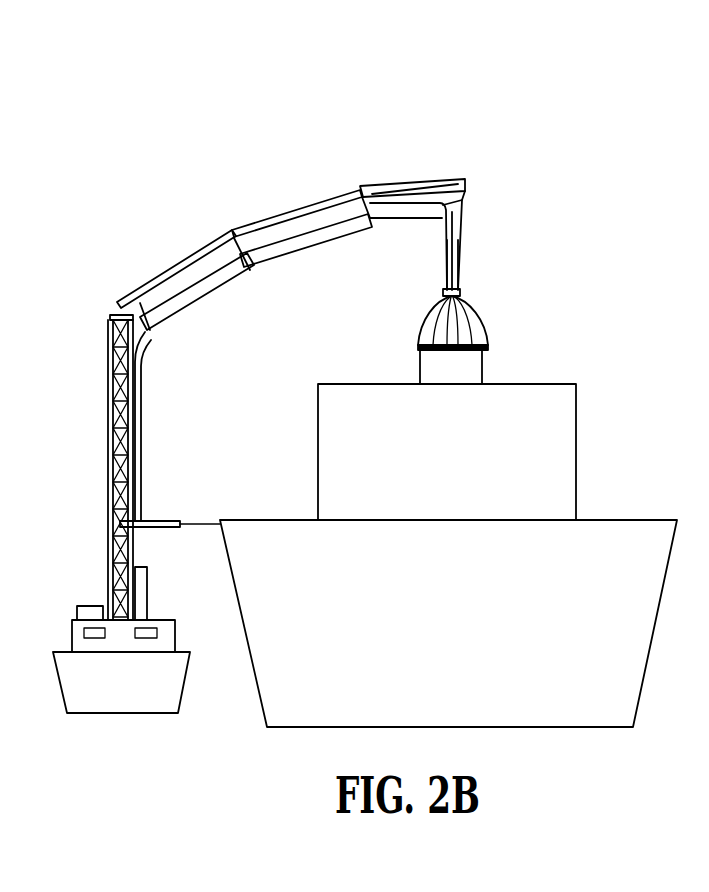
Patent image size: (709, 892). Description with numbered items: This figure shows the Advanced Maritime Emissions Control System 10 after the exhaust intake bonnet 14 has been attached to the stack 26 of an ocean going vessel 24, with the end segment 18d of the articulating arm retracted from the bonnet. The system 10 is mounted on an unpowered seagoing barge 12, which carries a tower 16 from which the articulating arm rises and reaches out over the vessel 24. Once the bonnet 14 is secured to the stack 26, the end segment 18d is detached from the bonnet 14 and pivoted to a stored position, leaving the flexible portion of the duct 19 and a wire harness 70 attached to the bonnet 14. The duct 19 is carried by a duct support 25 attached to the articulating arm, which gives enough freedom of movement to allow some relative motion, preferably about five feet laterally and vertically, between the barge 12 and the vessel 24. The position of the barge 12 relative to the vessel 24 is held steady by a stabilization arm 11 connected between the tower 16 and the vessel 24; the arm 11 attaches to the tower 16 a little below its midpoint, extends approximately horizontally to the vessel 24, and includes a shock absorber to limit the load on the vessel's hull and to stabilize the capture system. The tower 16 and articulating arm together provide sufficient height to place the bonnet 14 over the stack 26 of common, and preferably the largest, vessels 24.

The Advanced Maritime Emissions Control System (AMECS) 10 is at (105, 188).
The stabilization arm 11 is at (170, 521).
The Unpowered Seagoing Barge (USB) 12 is at (65, 665).
The Exhaust Intake Bonnet (EIB) 14 is at (457, 317).
The tower 16 is at (117, 400).
The end segment 18d is at (397, 190).
The duct 19 is at (276, 253).
The Ocean Going Vessel (OGV) 24 is at (532, 445).
The duct support 25 is at (463, 203).
The stack 26 is at (428, 370).
The wire harness 70 is at (462, 248).